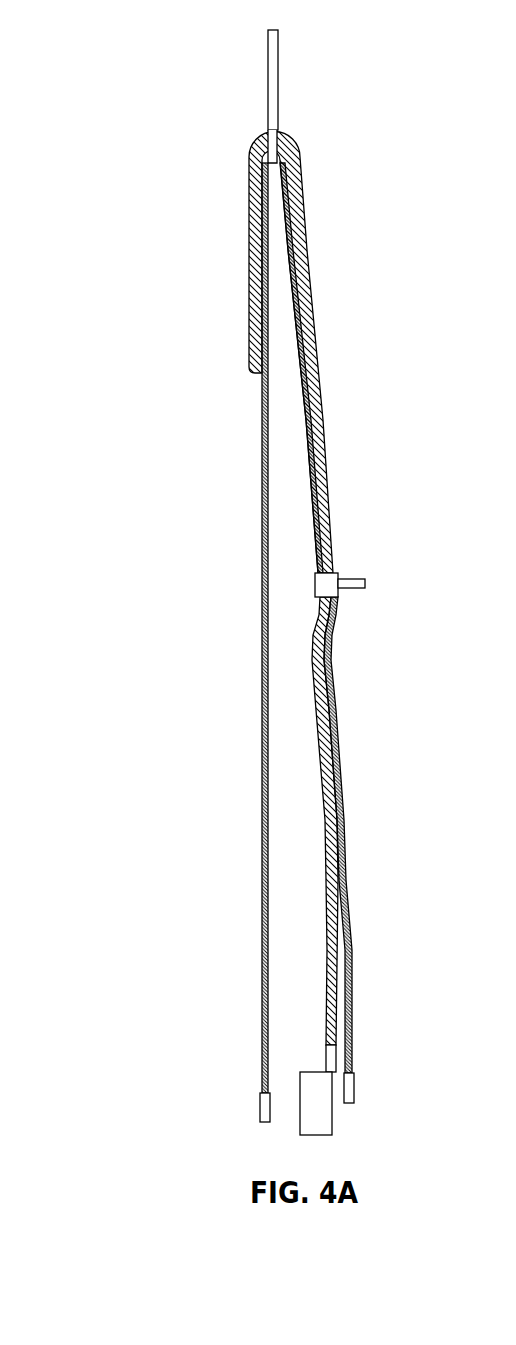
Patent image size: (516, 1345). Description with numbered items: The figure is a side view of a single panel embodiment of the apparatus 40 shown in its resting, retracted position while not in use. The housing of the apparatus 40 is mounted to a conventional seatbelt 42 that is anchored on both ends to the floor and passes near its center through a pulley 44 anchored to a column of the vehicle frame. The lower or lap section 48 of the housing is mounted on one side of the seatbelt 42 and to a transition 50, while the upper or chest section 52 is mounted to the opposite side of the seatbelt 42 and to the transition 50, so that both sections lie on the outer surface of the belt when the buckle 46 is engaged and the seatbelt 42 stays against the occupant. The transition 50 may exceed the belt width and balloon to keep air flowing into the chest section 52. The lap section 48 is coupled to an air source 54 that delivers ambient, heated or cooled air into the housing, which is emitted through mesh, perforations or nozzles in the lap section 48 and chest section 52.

The apparatus 40 is at (147, 57).
The seatbelt 42 is at (262, 427).
The pulley 44 is at (268, 100).
The buckle 46 is at (365, 580).
The lap section 48 is at (327, 963).
The transition 50 is at (350, 639).
The chest section 52 is at (323, 440).
The air source 54 is at (332, 1108).